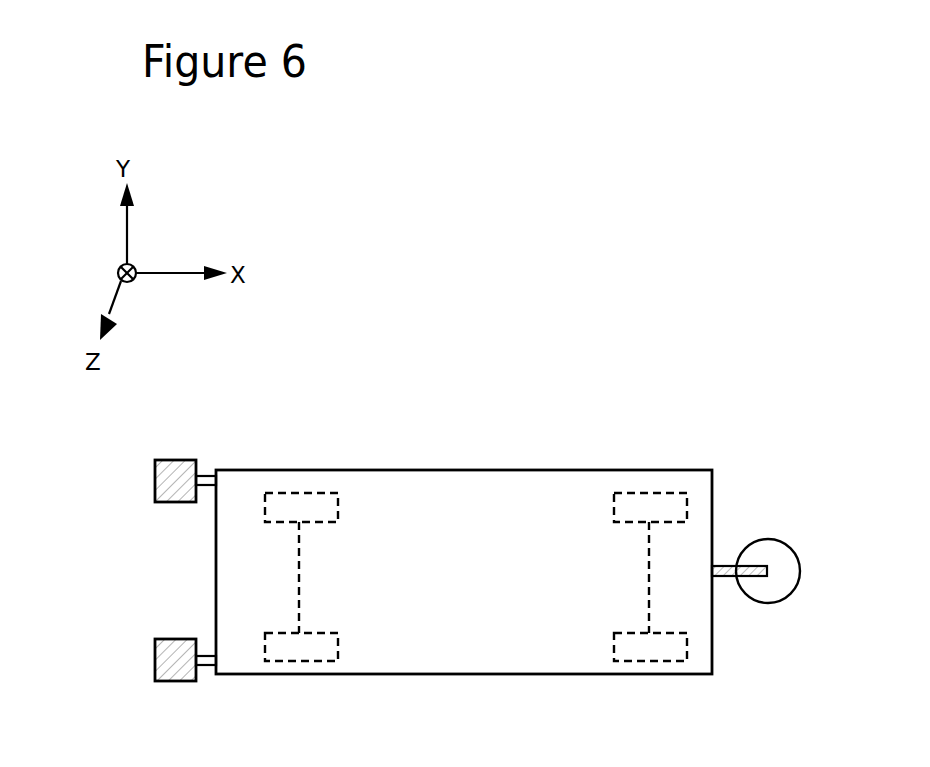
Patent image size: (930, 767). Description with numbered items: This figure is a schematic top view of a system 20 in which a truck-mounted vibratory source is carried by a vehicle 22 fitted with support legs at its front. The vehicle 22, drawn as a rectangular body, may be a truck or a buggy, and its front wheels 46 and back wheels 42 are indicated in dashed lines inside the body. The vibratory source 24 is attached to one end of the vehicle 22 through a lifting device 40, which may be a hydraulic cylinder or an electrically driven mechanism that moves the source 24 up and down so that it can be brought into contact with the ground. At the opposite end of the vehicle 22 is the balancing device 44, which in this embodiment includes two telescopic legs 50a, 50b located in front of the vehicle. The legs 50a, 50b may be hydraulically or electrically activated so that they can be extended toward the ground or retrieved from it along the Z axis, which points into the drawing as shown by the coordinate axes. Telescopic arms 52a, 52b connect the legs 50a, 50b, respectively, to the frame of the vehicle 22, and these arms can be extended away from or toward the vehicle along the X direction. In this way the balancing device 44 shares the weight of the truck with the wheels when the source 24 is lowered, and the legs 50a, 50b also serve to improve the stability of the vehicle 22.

The system 20 is at (498, 289).
The vehicle 22 is at (433, 440).
The vibratory source 24 is at (790, 557).
The lifting device 40 is at (728, 562).
The back wheels 42 is at (671, 645).
The balancing device 44 is at (122, 523).
The front wheels 46 is at (313, 648).
The telescopic leg 50a is at (167, 482).
The telescopic leg 50b is at (170, 672).
The telescopic arm 52a is at (207, 480).
The telescopic arm 52b is at (207, 660).